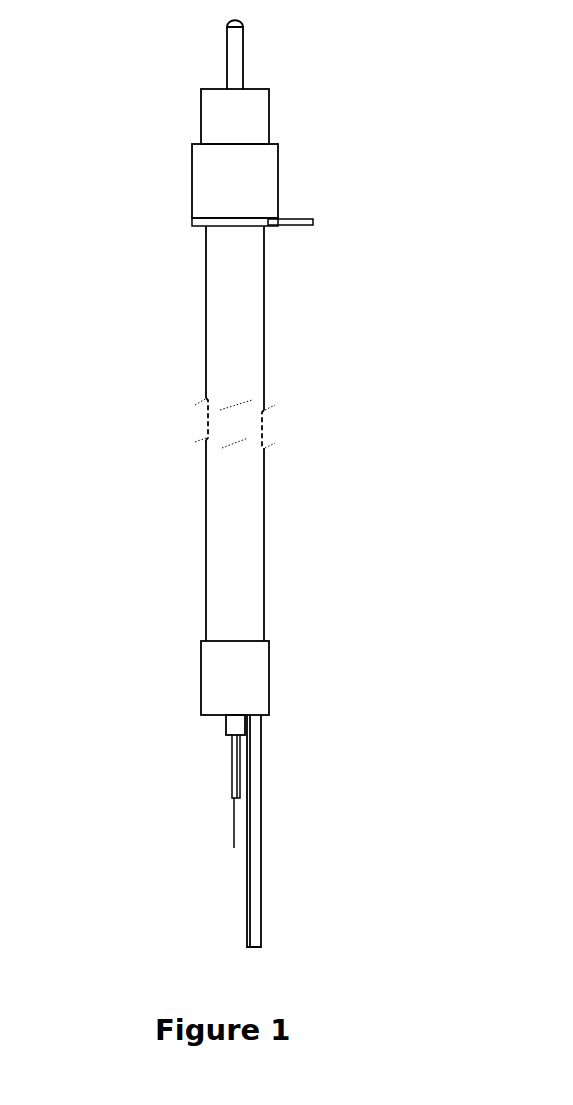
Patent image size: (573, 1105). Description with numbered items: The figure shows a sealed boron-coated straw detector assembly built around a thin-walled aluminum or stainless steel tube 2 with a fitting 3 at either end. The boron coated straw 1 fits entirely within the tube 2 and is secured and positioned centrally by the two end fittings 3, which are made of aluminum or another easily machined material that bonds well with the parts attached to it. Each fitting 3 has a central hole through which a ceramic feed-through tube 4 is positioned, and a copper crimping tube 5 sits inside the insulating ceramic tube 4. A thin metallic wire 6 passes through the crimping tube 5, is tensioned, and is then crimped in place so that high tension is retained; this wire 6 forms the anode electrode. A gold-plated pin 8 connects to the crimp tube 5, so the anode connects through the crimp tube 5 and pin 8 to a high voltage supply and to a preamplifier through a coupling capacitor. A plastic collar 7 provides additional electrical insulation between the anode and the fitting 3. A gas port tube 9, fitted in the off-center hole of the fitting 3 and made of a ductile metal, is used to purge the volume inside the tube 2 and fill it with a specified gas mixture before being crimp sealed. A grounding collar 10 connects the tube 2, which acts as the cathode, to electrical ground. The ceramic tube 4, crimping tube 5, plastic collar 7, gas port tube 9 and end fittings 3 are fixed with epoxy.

The boron coated straw 1 is at (276, 429).
The tube 2 is at (190, 337).
The fitting 3 is at (172, 183).
The ceramic feed-through tube 4 is at (209, 727).
The crimping tube 5 is at (210, 772).
The thin metallic wire 6 is at (222, 830).
The plastic collar 7 is at (288, 118).
The gold-plated pin 8 is at (207, 53).
The gas port tube 9 is at (287, 899).
The grounding collar 10 is at (335, 221).